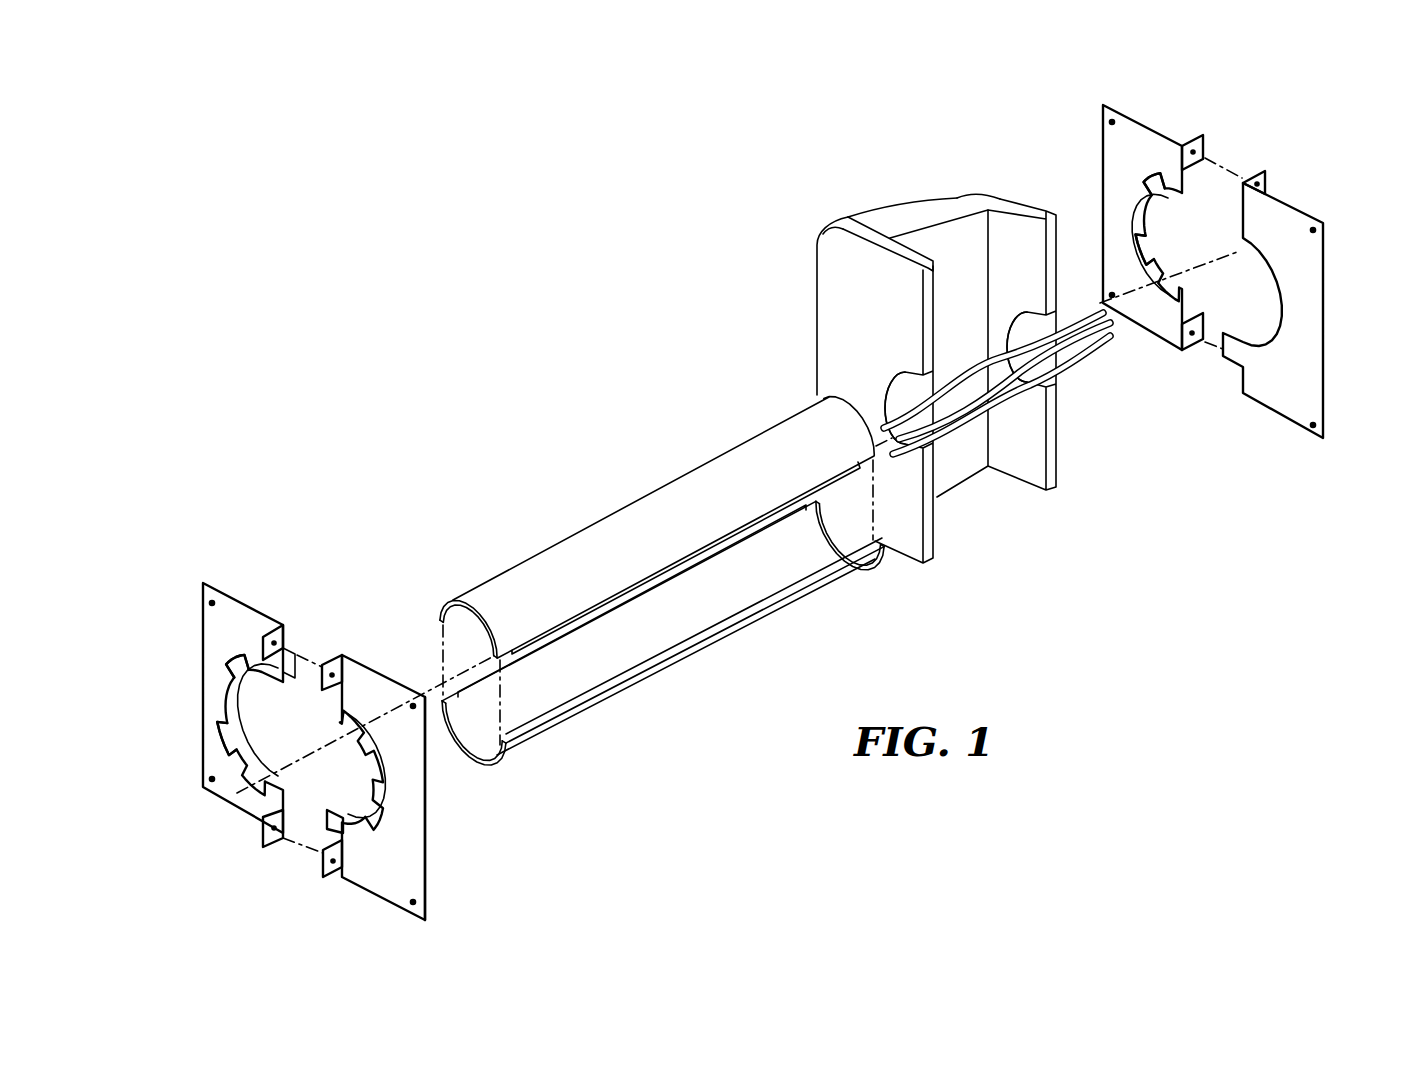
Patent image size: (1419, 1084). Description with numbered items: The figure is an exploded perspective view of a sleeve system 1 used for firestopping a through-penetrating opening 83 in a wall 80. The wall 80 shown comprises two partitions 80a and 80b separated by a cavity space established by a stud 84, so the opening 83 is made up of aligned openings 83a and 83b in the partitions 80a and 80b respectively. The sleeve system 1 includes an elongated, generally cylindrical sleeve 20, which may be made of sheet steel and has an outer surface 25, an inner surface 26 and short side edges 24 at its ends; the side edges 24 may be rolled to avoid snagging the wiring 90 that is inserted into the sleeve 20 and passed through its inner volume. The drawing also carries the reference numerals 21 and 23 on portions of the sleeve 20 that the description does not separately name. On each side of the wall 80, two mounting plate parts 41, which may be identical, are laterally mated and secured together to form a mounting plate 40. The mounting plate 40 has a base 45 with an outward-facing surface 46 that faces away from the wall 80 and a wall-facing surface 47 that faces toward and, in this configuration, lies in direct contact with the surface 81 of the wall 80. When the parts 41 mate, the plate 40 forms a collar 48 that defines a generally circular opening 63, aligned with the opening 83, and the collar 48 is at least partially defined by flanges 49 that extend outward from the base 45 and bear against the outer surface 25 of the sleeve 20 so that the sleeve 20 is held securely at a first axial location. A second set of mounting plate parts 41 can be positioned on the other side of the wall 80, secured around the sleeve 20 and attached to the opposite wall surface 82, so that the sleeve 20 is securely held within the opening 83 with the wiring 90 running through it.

The sleeve system 1 is at (394, 441).
The elongated sleeve 20 is at (545, 543).
The upper tube half 21 is at (585, 585).
The lower tube half 23 is at (793, 588).
The short side edges 24 is at (440, 614).
The outer surface 25 is at (675, 486).
The inner surface 26 is at (533, 705).
The mounting plate 40 is at (315, 638).
The mounting plate parts 41 is at (253, 802).
The base 45 is at (255, 615).
The outward-facing surface 46 is at (414, 864).
The wall-facing surface 47 is at (428, 791).
The collar 48 is at (232, 747).
The flanges 49 is at (1170, 240).
The opening 63 is at (250, 694).
The wall 80 is at (815, 263).
The partition 80a is at (858, 218).
The partition 80b is at (1007, 206).
The surface of wall 81 is at (910, 520).
The wall surface 82 is at (1060, 441).
The through-penetrating opening 83 is at (887, 400).
The aligned opening 83a is at (895, 383).
The aligned opening 83b is at (1022, 311).
The stud 84 is at (900, 215).
The wiring 90 is at (1062, 373).